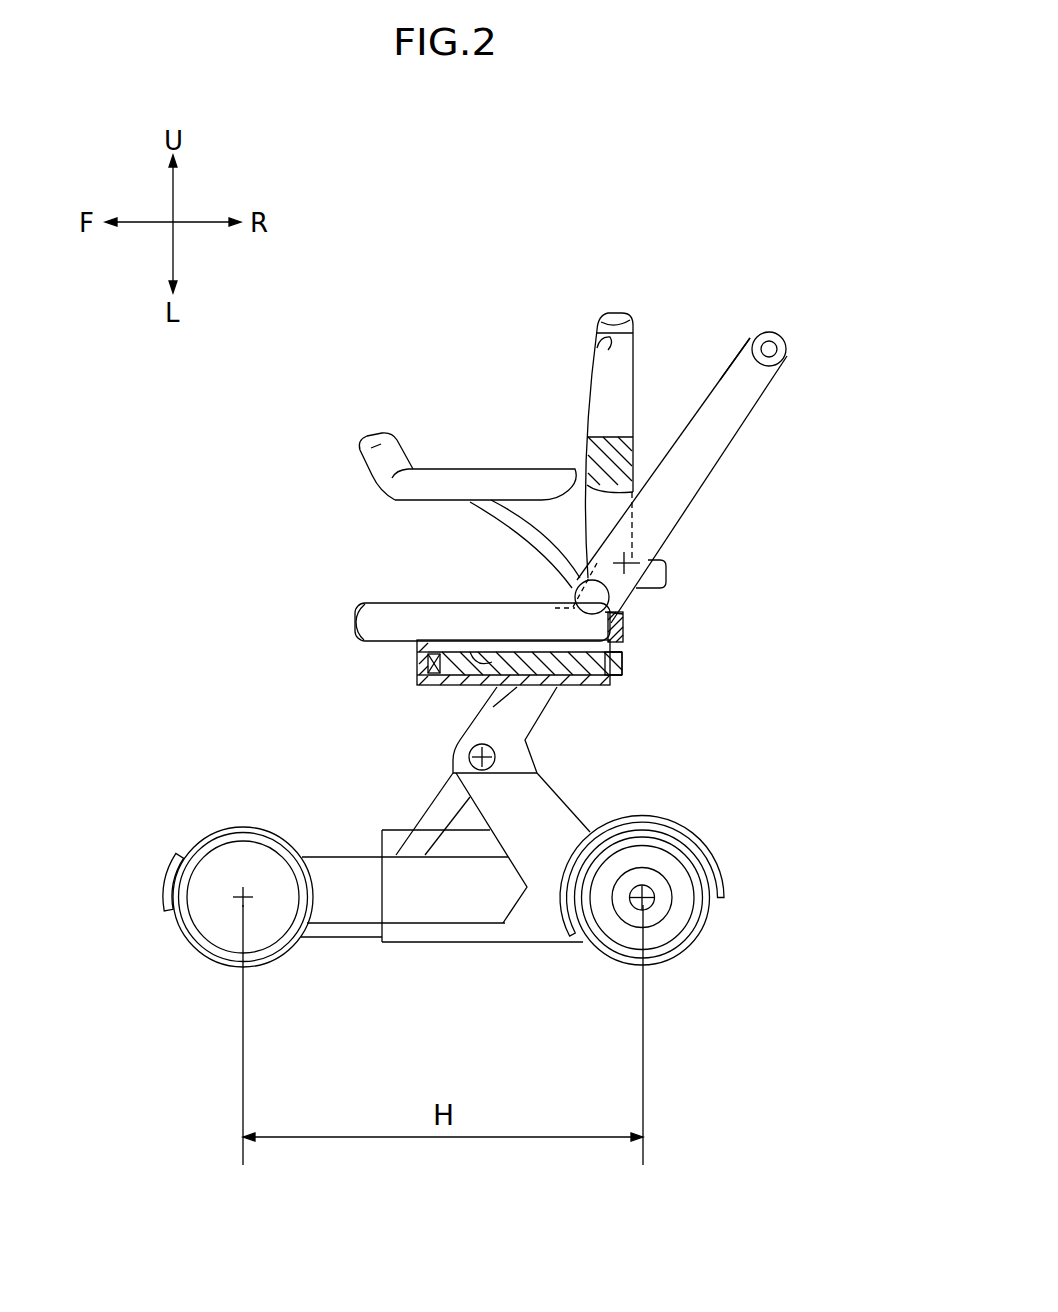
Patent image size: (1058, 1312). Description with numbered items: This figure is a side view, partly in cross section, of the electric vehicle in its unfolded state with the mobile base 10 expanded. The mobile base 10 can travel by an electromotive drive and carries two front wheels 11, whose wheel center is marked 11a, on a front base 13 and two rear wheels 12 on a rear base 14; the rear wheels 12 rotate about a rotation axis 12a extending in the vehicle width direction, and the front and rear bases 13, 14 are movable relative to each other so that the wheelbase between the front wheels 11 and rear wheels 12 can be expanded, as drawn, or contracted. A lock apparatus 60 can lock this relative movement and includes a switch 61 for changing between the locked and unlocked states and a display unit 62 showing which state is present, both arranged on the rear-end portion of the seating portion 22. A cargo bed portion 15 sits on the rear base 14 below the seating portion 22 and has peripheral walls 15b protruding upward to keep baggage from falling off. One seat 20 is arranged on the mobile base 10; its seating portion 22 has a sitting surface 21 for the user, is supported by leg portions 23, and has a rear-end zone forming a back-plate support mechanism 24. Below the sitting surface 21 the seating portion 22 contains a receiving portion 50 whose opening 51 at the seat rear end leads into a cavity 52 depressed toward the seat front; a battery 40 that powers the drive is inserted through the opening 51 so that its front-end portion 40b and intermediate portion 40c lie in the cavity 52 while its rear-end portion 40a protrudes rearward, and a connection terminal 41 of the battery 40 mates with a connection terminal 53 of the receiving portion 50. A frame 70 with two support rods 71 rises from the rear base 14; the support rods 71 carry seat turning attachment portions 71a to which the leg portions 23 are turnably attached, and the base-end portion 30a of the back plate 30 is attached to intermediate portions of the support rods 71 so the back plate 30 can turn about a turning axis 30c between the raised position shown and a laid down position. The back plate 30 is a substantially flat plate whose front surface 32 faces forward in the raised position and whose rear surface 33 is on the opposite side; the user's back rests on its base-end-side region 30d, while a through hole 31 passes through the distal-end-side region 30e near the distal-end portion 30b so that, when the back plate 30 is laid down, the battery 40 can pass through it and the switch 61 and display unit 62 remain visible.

The mobile base 10 is at (621, 812).
The front wheels 11 is at (180, 925).
The front wheel axle 11a is at (241, 903).
The rear wheels 12 is at (688, 945).
The rotation axis 12a is at (656, 898).
The front base 13 is at (172, 858).
The rear base 14 is at (712, 850).
The cargo bed portion 15 is at (458, 845).
The peripheral walls 15b is at (478, 845).
The seat 20 is at (354, 598).
The sitting surface 21 is at (420, 603).
The seating portion 22 is at (356, 622).
The leg portions 23 is at (445, 813).
The back-plate support mechanism 24 is at (650, 592).
The back plate 30 is at (619, 308).
The base-end portion 30a is at (660, 573).
The distal-end portion 30b is at (603, 318).
The turning axis 30c is at (632, 542).
The base-end-side region 30d is at (636, 512).
The distal-end-side region 30e is at (634, 365).
The through hole 31 is at (594, 348).
The front surface 32 is at (587, 452).
The rear surface 33 is at (634, 420).
The battery 40 is at (612, 684).
The rear-end portion 40a is at (618, 690).
The front-end portion 40b is at (450, 687).
The intermediate portion 40c is at (493, 707).
The connection terminal 41 is at (443, 676).
The receiving portion 50 is at (413, 650).
The opening 51 is at (624, 664).
The cavity 52 is at (496, 658).
The connection terminal 53 is at (422, 668).
The lock apparatus 60 is at (624, 638).
The switch 61 is at (624, 630).
The display unit 62 is at (622, 618).
The frame 70 is at (768, 390).
The support rods 71 is at (716, 420).
The seat turning attachment portions 71a is at (508, 753).